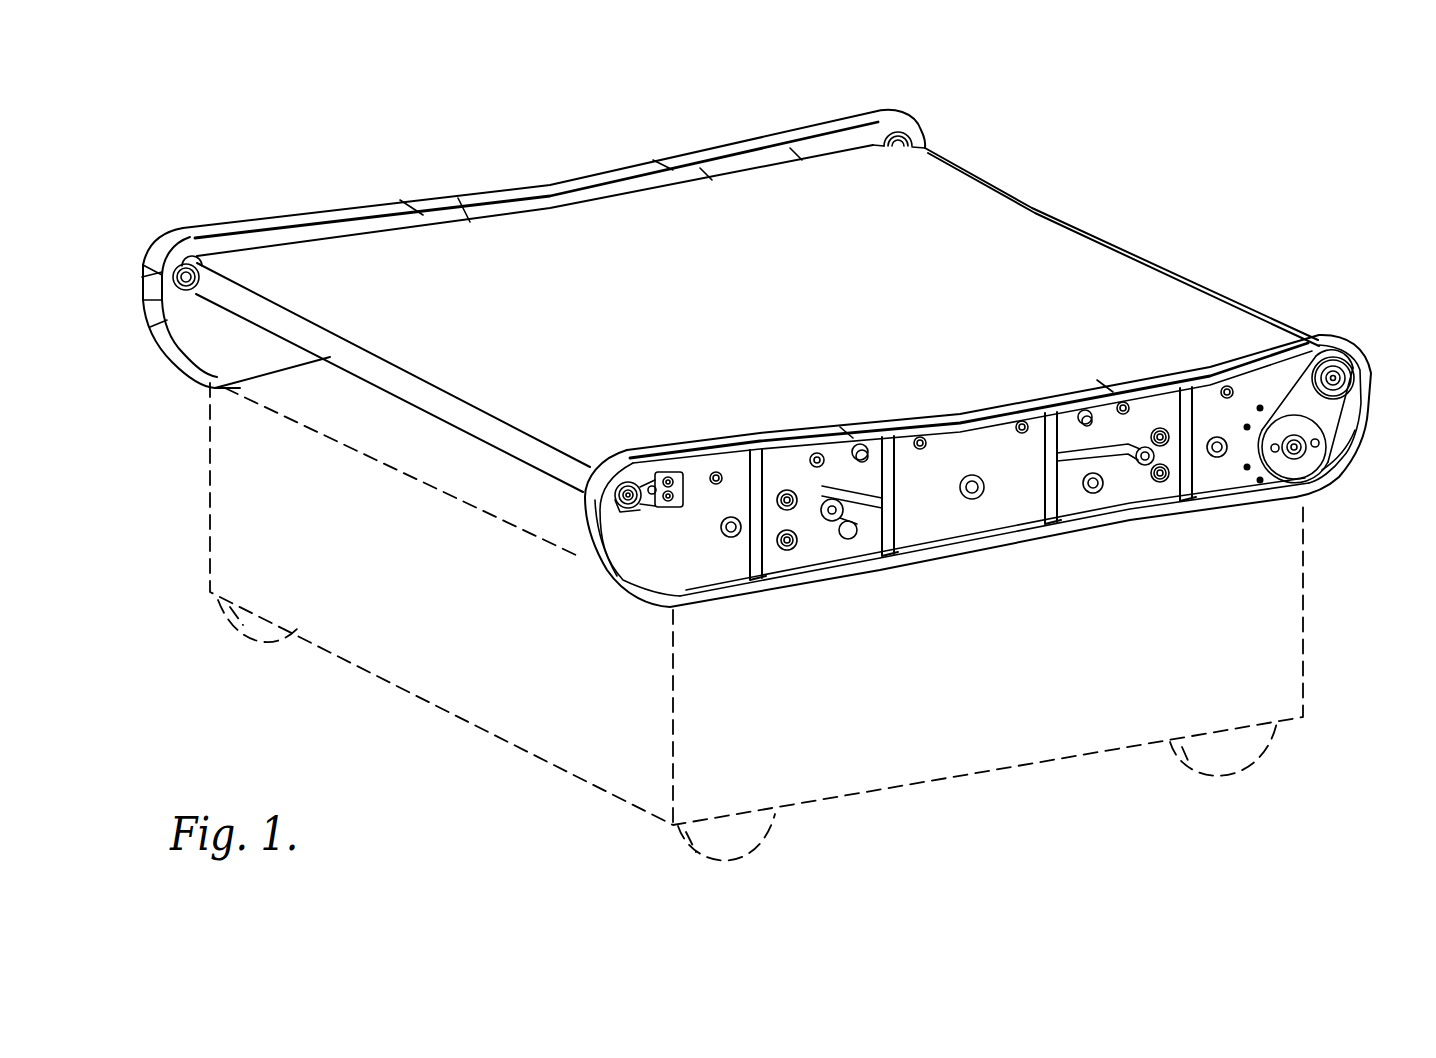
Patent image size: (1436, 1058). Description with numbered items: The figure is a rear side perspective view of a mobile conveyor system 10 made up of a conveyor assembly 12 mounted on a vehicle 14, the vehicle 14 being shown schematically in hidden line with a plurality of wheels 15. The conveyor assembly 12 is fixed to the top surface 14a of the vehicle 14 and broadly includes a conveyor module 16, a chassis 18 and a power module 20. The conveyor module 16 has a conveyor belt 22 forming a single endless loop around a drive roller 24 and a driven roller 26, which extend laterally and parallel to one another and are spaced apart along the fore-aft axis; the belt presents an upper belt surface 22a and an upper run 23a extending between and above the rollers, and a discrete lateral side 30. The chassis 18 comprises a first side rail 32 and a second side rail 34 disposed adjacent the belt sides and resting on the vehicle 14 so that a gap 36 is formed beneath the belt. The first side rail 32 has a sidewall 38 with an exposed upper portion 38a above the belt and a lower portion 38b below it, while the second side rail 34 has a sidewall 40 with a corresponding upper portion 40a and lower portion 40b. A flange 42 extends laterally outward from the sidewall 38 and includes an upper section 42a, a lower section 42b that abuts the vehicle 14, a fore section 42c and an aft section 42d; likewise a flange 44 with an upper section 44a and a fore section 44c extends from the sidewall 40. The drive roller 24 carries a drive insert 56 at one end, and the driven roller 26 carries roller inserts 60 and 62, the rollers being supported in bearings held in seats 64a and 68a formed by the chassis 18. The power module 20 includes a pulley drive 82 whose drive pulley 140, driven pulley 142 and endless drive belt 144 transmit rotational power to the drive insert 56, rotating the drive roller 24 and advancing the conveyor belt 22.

The mobile conveyor system 10 is at (1147, 125).
The conveyor assembly 12 is at (1125, 230).
The vehicle 14 is at (1312, 632).
The top surface 14a is at (384, 420).
The wheels 15 is at (250, 632).
The conveyor module 16 is at (1172, 262).
The chassis 18 is at (866, 140).
The power module 20 is at (1330, 462).
The conveyor belt 22 is at (1032, 211).
The upper belt surface 22a is at (718, 208).
The upper run 23a is at (796, 203).
The drive roller 24 is at (1337, 370).
The driven roller 26 is at (660, 475).
The lateral side 30 is at (463, 225).
The first side rail 32 is at (730, 570).
The second side rail 34 is at (240, 212).
The gap 36 is at (493, 483).
The sidewall 38 is at (1003, 505).
The upper portion 38a is at (958, 433).
The lower portion 38b is at (935, 532).
The sidewall 40 is at (212, 335).
The upper portion 40a is at (300, 240).
The lower portion 40b is at (270, 372).
The flange 42 is at (1182, 373).
The upper section 42a is at (1003, 406).
The lower section 42b is at (1090, 527).
The fore section 42c is at (1345, 448).
The aft section 42d is at (600, 545).
The flange 44 is at (830, 126).
The upper section 44a is at (548, 190).
The fore section 44c is at (928, 143).
The drive insert 56 is at (1337, 357).
The roller insert 60 is at (628, 482).
The roller insert 62 is at (192, 257).
The seat 64a is at (1275, 405).
The seat 68a is at (643, 510).
The pulley drive 82 is at (1272, 490).
The drive pulley 140 is at (1307, 483).
The driven pulley 142 is at (1357, 383).
The drive belt 144 is at (1280, 426).